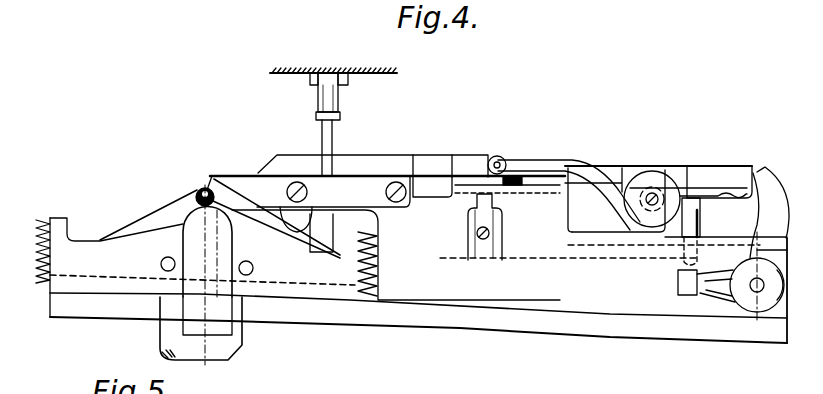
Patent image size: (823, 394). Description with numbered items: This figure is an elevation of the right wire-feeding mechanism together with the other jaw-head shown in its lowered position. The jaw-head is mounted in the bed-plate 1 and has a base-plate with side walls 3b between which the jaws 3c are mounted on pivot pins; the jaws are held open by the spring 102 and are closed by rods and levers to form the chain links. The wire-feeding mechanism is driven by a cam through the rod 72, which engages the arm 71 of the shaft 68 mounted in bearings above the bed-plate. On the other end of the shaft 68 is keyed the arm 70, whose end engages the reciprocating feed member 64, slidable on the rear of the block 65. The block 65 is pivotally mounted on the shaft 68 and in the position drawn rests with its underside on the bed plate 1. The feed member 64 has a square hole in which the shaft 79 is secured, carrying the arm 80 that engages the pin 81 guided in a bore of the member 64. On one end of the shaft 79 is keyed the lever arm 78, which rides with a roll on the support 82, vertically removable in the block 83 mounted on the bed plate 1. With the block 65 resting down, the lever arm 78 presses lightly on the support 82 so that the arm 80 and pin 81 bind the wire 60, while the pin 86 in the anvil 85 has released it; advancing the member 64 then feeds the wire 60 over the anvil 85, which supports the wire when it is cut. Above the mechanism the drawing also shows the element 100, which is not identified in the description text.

The bed-plate 1 is at (356, 76).
The side wall 3b is at (143, 242).
The jaw 3c is at (172, 199).
The wire 60 is at (692, 187).
The reciprocating feed member 64 is at (732, 178).
The block 65 is at (453, 160).
The shaft 68 is at (752, 282).
The arm 70 is at (767, 176).
The arm 71 is at (680, 288).
The rod 72 is at (701, 232).
The lever arm 78 is at (608, 180).
The shaft 79 is at (650, 185).
The arm 80 is at (658, 199).
The pin 81 is at (633, 226).
The support 82 is at (512, 188).
The block 83 is at (470, 248).
The anvil 85 is at (313, 160).
The pin 86 is at (336, 152).
The stop member 100 is at (318, 110).
The spring 102 is at (41, 285).